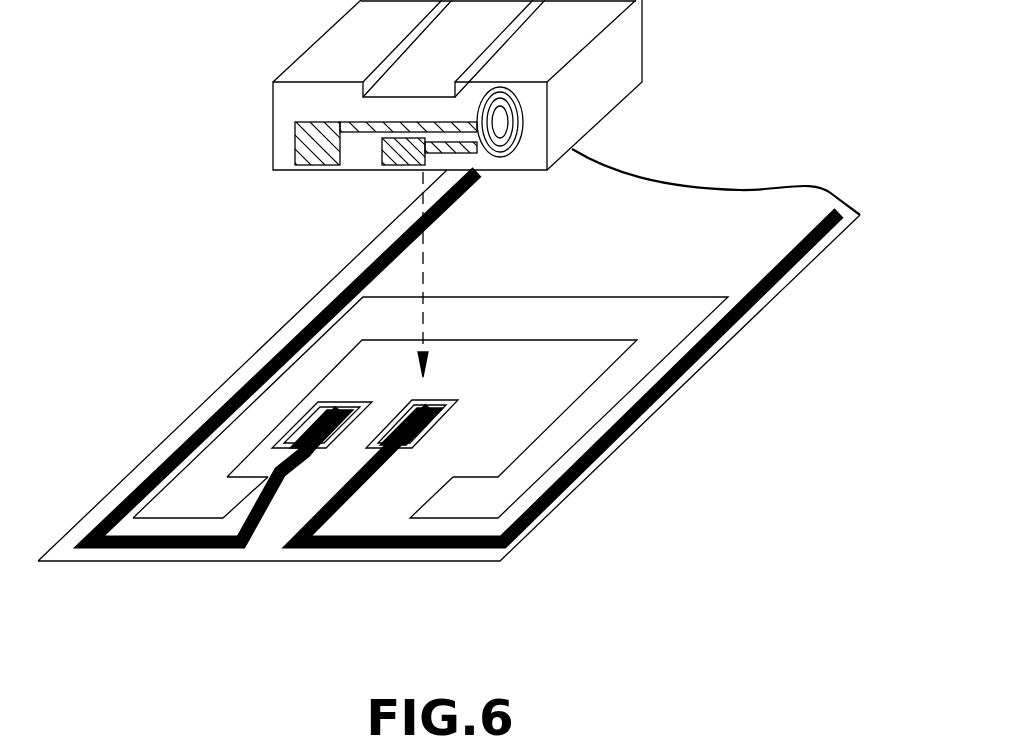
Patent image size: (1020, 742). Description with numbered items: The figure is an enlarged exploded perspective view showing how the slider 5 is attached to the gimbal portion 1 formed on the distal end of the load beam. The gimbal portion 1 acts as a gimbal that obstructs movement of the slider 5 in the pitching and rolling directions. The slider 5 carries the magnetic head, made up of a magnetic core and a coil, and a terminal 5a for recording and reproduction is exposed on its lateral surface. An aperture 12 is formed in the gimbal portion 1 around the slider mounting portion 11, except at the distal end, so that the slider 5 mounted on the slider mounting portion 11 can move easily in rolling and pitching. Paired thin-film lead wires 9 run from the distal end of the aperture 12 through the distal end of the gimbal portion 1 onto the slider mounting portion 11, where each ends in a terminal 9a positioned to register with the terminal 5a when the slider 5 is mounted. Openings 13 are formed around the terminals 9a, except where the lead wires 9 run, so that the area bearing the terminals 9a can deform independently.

The gimbal portion 1 is at (220, 375).
The slider 5 is at (648, 49).
The terminal 5a is at (400, 158).
The thin-film lead wire 9 is at (125, 548).
The terminal 9a is at (398, 432).
The slider mounting portion 11 is at (517, 442).
The aperture 12 is at (673, 298).
The openings 13 is at (327, 448).